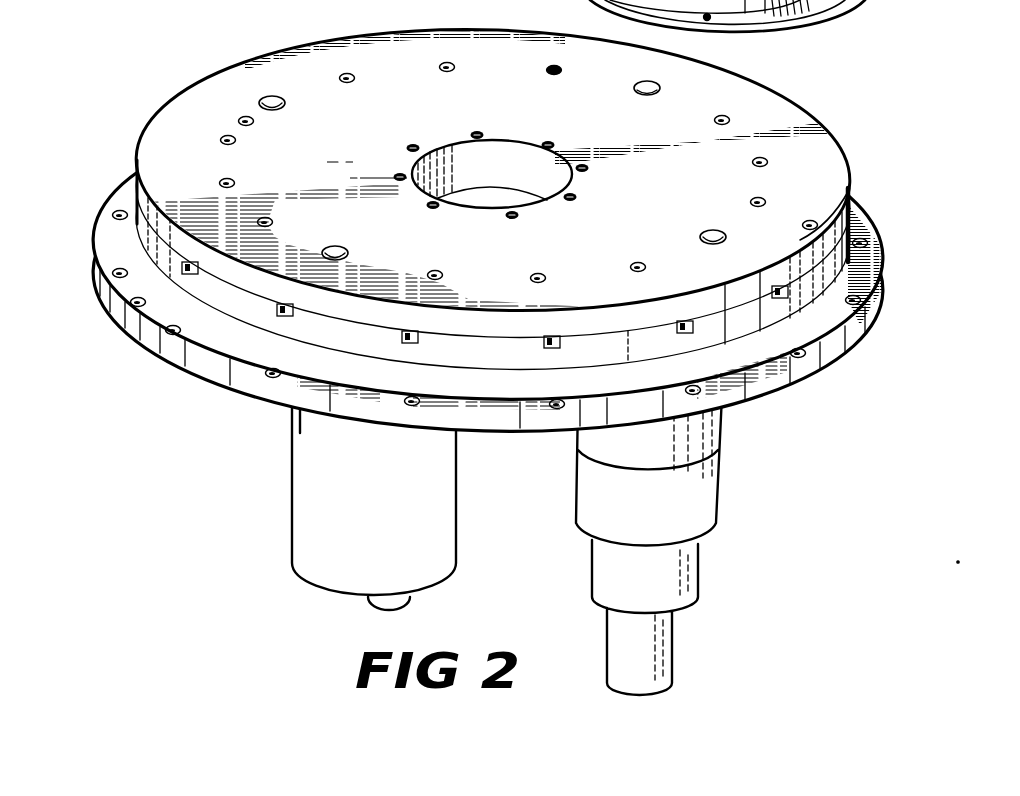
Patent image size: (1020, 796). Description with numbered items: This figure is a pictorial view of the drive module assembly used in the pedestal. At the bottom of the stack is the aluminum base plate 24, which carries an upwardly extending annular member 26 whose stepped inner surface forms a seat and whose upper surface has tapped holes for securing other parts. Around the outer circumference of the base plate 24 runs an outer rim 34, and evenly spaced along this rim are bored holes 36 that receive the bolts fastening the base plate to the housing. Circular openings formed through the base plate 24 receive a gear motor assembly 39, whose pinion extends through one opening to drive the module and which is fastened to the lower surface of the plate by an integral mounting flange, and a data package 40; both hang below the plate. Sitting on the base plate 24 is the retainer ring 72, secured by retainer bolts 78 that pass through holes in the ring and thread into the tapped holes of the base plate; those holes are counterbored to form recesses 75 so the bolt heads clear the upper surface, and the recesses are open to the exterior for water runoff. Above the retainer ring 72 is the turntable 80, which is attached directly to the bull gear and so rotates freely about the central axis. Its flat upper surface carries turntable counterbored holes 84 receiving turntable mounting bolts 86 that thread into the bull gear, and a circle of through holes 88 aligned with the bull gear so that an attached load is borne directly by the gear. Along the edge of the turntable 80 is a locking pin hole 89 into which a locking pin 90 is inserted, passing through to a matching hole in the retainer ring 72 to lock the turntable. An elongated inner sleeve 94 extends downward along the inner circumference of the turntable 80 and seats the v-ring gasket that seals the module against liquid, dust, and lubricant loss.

The base plate 24 is at (488, 347).
The annular member 26 is at (218, 326).
The outer rim 34 is at (849, 206).
The bored holes 36 is at (813, 347).
The gear motor assembly 39 is at (668, 531).
The data package 40 is at (398, 556).
The retainer ring 72 is at (372, 342).
The recesses 75 is at (275, 312).
The retainer bolts 78 is at (416, 331).
The turntable 80 is at (360, 165).
The turntable counterbored holes 84 is at (647, 82).
The turntable mounting bolts 86 is at (650, 97).
The through holes 88 is at (546, 74).
The locking pin hole 89 is at (795, 224).
The locking pin 90 is at (803, 225).
The elongated inner sleeve 94 is at (512, 171).